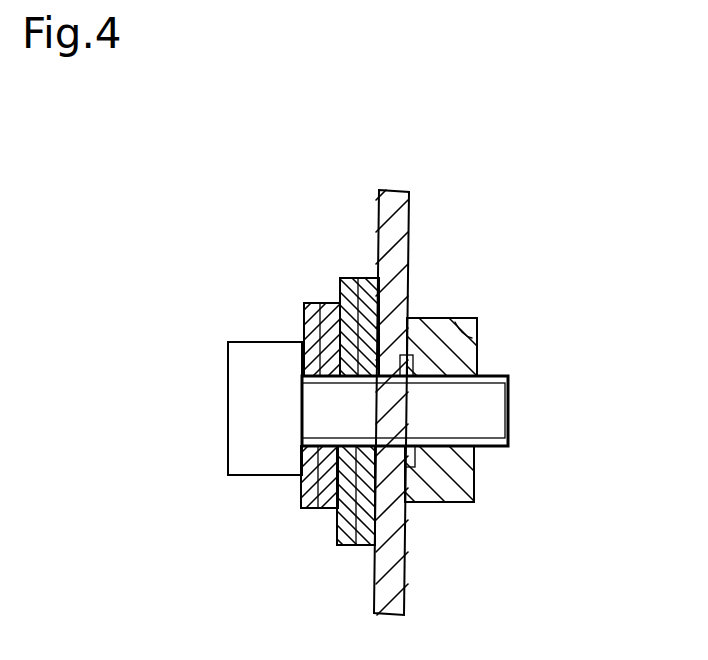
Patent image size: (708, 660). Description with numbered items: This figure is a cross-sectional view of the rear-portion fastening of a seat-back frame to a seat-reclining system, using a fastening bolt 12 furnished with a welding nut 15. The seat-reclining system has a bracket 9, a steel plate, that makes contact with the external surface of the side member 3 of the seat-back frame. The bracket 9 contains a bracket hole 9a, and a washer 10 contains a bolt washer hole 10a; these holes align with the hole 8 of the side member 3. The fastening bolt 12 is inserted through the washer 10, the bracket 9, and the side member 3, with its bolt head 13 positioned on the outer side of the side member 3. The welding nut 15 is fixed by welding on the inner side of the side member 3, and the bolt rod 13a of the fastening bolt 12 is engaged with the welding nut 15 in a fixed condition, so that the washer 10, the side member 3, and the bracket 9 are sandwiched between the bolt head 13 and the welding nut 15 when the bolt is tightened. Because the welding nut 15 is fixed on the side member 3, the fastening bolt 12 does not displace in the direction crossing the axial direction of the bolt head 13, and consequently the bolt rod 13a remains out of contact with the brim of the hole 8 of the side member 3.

The side member 3 is at (405, 213).
The hole 8 is at (400, 302).
The bracket 9 is at (358, 277).
The bracket hole 9a is at (328, 510).
The washer 10 is at (332, 302).
The bolt washer hole 10a is at (320, 302).
The fastening bolt 12 is at (228, 358).
The bolt head 13 is at (247, 381).
The bolt rod 13a is at (493, 415).
The welding nut 15 is at (476, 318).